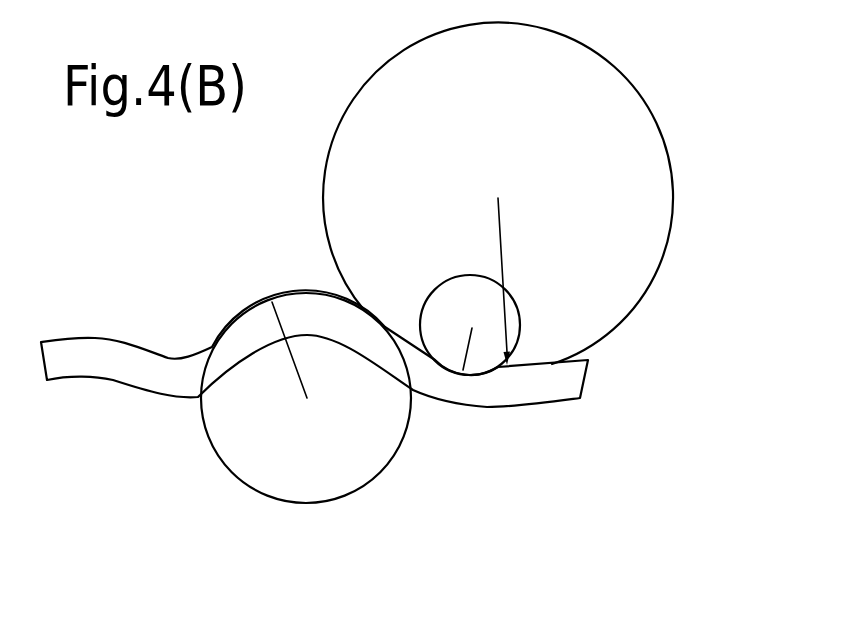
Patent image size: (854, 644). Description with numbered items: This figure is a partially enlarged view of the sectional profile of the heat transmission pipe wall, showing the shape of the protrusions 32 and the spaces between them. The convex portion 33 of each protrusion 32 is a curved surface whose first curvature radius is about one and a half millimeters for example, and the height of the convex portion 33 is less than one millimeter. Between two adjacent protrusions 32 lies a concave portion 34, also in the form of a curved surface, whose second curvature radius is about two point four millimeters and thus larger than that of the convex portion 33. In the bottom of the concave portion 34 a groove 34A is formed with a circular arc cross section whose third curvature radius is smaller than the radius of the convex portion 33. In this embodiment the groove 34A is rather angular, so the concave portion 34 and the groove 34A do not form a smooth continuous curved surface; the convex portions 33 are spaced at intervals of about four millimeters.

The protrusion 32 is at (289, 272).
The convex portion 33 is at (340, 300).
The concave portion 34 is at (523, 363).
The groove 34A is at (437, 357).